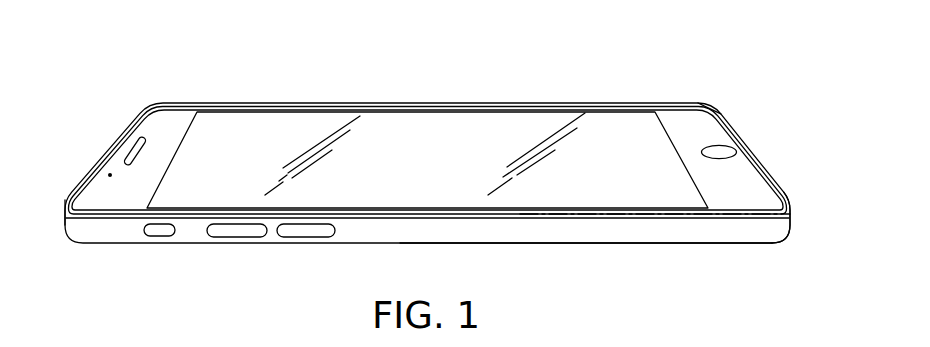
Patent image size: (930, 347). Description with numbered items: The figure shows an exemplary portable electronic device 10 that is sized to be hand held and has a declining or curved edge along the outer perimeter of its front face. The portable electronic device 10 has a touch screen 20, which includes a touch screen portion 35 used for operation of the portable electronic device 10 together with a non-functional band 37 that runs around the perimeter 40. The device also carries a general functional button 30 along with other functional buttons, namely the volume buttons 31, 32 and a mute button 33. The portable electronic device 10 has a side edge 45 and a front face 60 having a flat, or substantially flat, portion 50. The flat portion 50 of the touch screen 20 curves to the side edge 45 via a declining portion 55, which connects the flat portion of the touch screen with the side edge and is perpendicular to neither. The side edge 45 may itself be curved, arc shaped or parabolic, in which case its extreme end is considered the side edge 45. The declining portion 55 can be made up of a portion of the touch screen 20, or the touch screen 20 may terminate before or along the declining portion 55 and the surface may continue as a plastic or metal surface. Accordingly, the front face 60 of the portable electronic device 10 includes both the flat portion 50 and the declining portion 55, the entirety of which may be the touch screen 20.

The portable electronic device 10 is at (126, 47).
The touch screen 20 is at (241, 100).
The general functional button 30 is at (723, 145).
The volume button 31 is at (235, 238).
The volume button 32 is at (299, 238).
The mute button 33 is at (160, 237).
The touch screen portion 35 is at (428, 110).
The non-functional band 37 is at (83, 203).
The perimeter 40 is at (102, 152).
The side edge 45 is at (680, 230).
The flat portion 50 is at (607, 125).
The declining portion 55 is at (780, 192).
The front face 60 is at (719, 81).